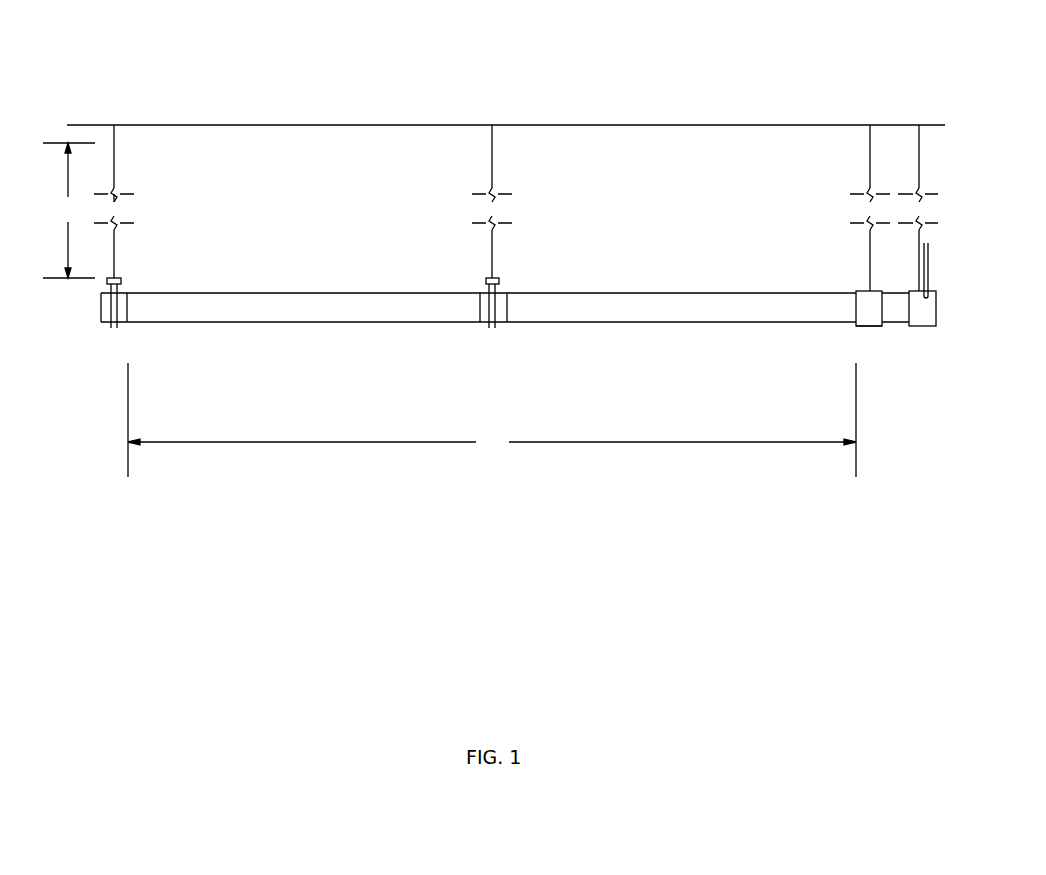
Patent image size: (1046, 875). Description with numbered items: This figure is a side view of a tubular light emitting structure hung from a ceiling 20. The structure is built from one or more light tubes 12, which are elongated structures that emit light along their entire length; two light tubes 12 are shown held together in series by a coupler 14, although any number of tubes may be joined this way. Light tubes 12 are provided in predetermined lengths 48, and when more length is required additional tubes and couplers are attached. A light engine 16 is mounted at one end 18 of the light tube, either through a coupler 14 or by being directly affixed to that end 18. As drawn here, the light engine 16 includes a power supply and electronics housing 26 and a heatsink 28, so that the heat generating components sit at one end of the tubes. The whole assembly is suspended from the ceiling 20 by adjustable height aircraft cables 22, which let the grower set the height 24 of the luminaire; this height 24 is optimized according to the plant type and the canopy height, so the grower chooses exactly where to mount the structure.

The light tube 12 is at (305, 293).
The coupler 14 is at (120, 322).
The light engine 16 is at (905, 332).
The one end of light tube 18 is at (848, 293).
The ceiling 20 is at (327, 125).
The adjustable height aircraft cables 22 is at (114, 172).
The height 24 is at (69, 210).
The power supply and electronics housing 26 is at (869, 327).
The heatsink 28 is at (897, 292).
The predetermined length 48 is at (492, 420).